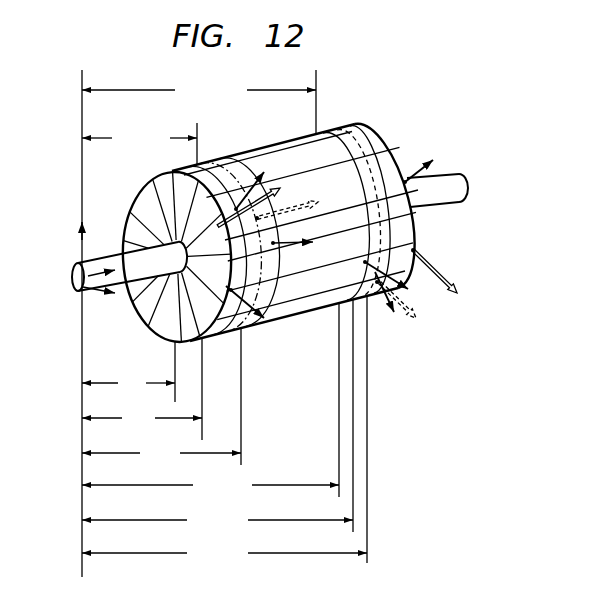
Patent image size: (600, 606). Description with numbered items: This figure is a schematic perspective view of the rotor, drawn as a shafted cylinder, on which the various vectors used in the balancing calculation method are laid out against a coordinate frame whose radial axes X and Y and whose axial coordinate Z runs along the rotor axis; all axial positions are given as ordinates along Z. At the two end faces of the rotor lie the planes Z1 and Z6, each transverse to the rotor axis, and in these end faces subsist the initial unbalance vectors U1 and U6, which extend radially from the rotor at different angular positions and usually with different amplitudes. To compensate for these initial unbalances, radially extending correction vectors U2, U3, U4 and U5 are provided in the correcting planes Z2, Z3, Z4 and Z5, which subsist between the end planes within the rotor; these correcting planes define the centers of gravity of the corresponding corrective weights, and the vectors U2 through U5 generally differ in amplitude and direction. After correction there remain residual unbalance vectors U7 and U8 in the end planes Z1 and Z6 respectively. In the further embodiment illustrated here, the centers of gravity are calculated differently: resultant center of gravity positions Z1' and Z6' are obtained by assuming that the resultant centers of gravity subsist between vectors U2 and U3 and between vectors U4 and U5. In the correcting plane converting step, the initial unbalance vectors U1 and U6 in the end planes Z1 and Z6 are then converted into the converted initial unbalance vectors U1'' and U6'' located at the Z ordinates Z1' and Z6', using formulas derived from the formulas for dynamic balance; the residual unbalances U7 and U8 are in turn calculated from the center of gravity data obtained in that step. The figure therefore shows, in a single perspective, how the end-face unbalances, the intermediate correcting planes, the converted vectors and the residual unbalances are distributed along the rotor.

The initial unbalance vector U1 is at (259, 205).
The converted initial unbalance vector U1'' is at (299, 205).
The radially extending correction vector U2 is at (259, 184).
The radially extending correction vector U3 is at (303, 242).
The radially extending correction vector U4 is at (396, 286).
The radially extending correction vector U5 is at (388, 307).
The initial unbalance vector U6 is at (443, 280).
The converted initial unbalance vector U6'' is at (410, 309).
The residual unbalance vector U7 is at (259, 303).
The residual unbalance vector U8 is at (429, 167).
The end face plane Z1 is at (128, 372).
The resultant center of gravity position Z1' is at (139, 143).
The correcting plane Z2 is at (142, 389).
The correcting plane Z3 is at (161, 396).
The correcting plane Z4 is at (210, 399).
The correcting plane Z5 is at (217, 415).
The end face plane Z6 is at (224, 430).
The resultant center of gravity position Z6' is at (199, 102).
The X coordinate axis X is at (104, 301).
The Y coordinate axis Y is at (80, 323).
The Z coordinate axis Z is at (108, 278).